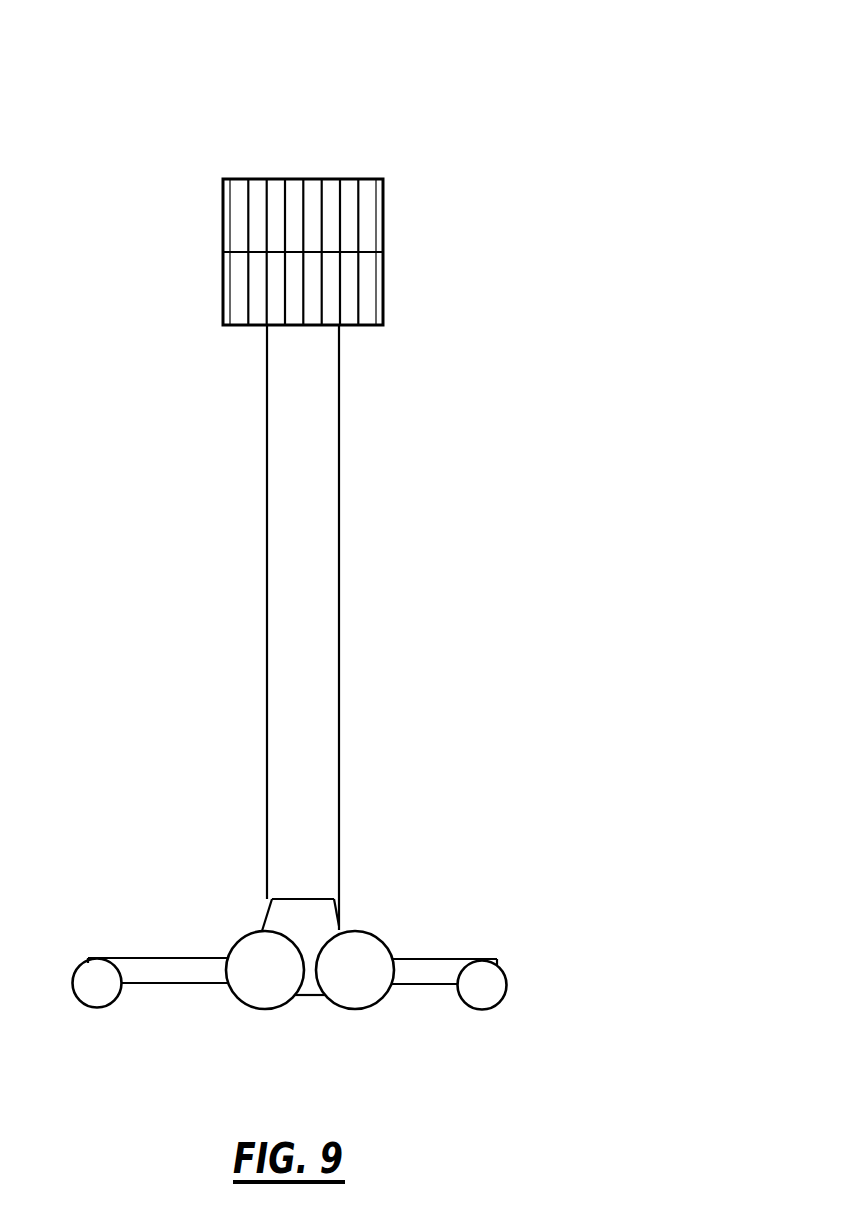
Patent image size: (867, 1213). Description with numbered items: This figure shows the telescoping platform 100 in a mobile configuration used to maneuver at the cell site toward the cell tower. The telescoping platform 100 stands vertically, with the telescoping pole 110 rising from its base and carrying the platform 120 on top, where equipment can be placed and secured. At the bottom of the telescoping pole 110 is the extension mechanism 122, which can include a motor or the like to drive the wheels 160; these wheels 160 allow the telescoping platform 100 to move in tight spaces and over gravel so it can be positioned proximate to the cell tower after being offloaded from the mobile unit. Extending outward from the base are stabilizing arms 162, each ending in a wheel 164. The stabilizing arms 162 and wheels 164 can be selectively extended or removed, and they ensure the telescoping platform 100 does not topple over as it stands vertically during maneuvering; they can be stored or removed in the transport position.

The telescoping platform 100 is at (452, 64).
The telescoping pole 110 is at (339, 640).
The platform 120 is at (382, 278).
The extension mechanism 122 is at (326, 924).
The wheels 160 is at (242, 1003).
The stabilizing arms 162 is at (433, 958).
The wheels 164 is at (503, 980).